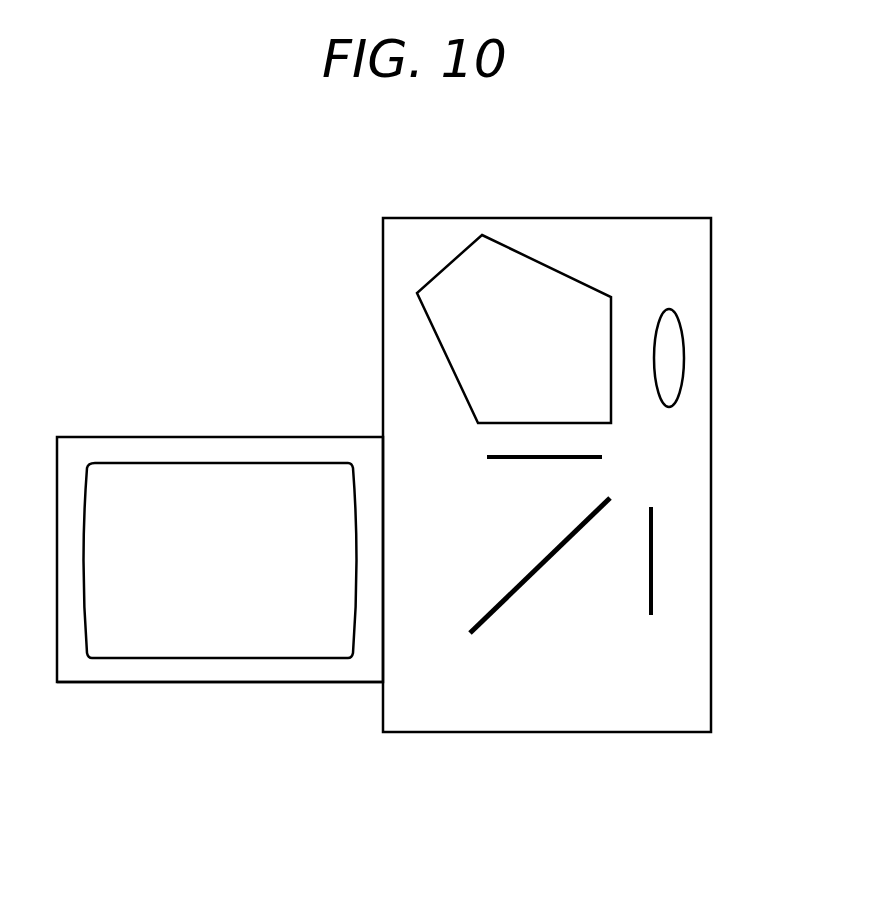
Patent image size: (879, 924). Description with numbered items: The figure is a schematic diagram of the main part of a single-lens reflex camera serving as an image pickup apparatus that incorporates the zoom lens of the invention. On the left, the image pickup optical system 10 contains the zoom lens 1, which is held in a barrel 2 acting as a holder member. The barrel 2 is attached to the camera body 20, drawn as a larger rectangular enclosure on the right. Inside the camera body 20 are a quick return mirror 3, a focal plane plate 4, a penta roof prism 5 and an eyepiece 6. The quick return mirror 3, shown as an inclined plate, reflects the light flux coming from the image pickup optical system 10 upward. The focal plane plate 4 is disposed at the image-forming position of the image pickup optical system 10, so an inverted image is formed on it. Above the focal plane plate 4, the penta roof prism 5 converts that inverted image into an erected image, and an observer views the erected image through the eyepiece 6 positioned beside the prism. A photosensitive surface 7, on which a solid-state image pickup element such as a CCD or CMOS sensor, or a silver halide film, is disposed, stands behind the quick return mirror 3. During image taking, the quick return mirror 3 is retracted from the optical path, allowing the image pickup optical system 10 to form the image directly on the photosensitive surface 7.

The camera body 20 is at (584, 200).
The image pickup optical system 10 is at (273, 420).
The zoom lens 1 is at (173, 463).
The barrel 2 is at (215, 685).
The penta roof prism 5 is at (446, 263).
The eyepiece 6 is at (684, 360).
The focal plane plate 4 is at (520, 460).
The quick return mirror 3 is at (508, 598).
The photosensitive surface 7 is at (655, 548).